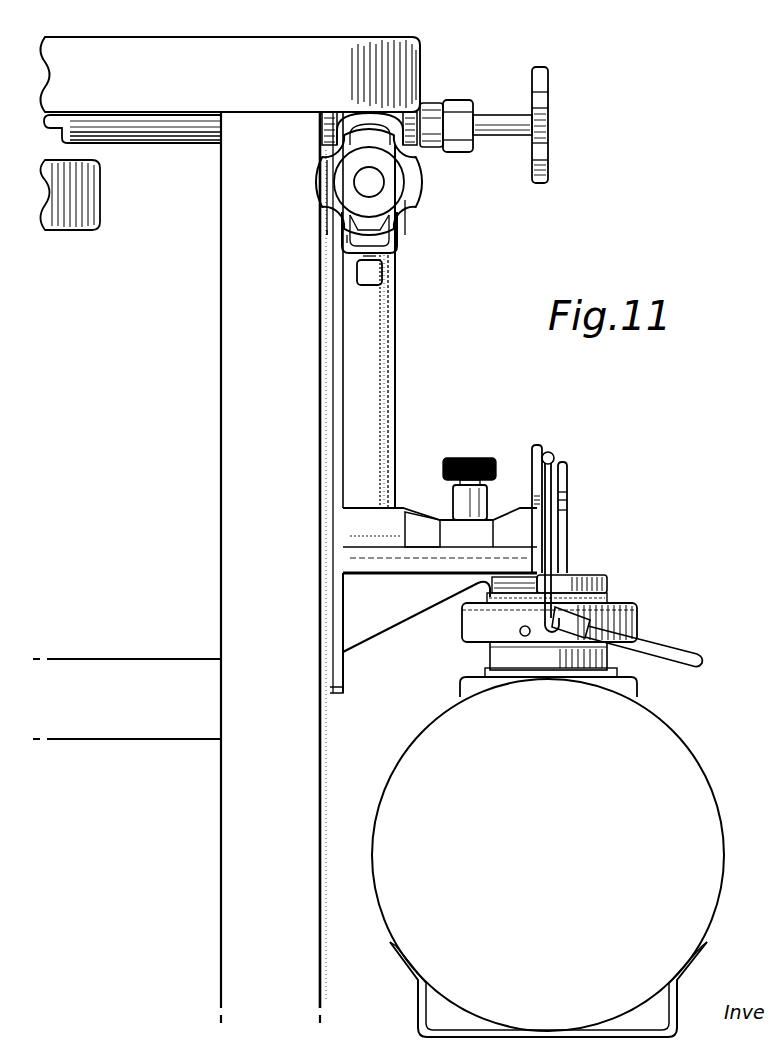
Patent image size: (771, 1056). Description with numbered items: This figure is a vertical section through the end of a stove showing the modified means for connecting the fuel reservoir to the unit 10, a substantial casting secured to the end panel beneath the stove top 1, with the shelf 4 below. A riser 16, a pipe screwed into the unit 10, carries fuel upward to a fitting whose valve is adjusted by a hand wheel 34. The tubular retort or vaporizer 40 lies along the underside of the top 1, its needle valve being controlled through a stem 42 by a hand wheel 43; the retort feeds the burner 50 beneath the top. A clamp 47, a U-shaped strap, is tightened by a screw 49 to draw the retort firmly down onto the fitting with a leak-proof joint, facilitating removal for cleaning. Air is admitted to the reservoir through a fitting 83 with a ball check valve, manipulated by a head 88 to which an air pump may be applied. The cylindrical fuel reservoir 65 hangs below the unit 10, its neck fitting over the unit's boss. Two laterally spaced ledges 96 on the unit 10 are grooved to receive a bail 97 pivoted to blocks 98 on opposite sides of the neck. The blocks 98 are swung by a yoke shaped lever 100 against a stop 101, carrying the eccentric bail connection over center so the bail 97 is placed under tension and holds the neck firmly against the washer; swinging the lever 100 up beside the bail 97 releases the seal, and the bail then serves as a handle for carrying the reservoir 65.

The top 1 is at (289, 46).
The shelf 4 is at (183, 567).
The unit 10 is at (395, 610).
The riser 16 is at (382, 363).
The hand wheel 34 is at (393, 182).
The retort or vaporizer 40 is at (190, 135).
The stem 42 is at (503, 120).
The hand wheel 43 is at (548, 167).
The clamp 47 is at (397, 237).
The screw 49 is at (382, 275).
The burner 50 is at (72, 216).
The fuel reservoir 65 is at (548, 857).
The fitting 83 is at (463, 495).
The head 88 is at (475, 458).
The ledges 96 is at (568, 473).
The bail 97 is at (568, 517).
The blocks 98 is at (595, 577).
The yoke shaped lever 100 is at (680, 652).
The stop 101 is at (520, 630).